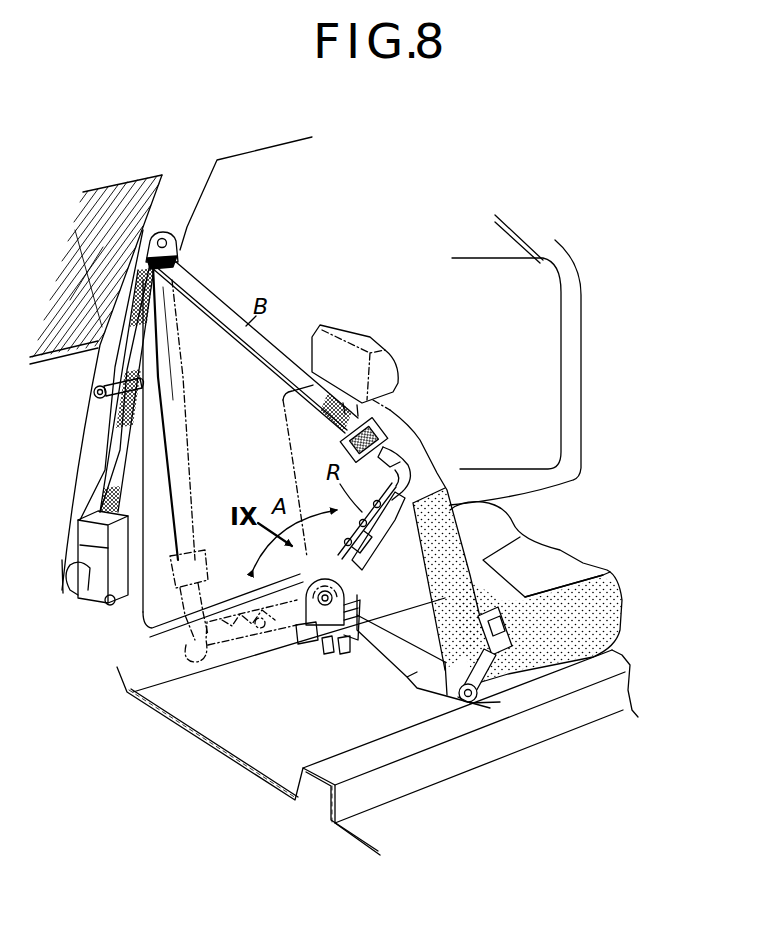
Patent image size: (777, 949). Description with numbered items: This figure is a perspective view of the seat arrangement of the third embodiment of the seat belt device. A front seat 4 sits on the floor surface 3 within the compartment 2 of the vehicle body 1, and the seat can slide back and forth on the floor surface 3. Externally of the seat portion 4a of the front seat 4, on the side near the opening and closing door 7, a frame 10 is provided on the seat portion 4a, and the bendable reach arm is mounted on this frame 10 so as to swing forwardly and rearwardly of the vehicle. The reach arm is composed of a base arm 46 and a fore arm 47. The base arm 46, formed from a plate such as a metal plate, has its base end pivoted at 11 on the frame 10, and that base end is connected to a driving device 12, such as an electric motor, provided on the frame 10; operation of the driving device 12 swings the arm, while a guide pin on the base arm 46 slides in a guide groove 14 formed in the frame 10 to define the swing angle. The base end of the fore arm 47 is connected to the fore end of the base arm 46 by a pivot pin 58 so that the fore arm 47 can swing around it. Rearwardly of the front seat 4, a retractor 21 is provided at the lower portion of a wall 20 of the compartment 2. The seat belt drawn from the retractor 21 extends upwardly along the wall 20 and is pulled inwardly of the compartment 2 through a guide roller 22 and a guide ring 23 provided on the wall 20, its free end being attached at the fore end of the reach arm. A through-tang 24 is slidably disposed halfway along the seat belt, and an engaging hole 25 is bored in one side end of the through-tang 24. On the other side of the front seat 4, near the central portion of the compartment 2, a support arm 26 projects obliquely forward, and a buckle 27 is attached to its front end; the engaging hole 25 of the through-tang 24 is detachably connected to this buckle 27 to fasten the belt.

The vehicle body 1 is at (181, 158).
The compartment 2 is at (162, 661).
The floor surface 3 is at (193, 713).
The front seat 4 is at (568, 545).
The seat portion 4a is at (602, 575).
The opening and closing door 7 is at (484, 468).
The frame 10 is at (295, 640).
The pivot 11 is at (318, 635).
The driving device 12 is at (345, 636).
The guide groove 14 is at (324, 588).
The wall 20 is at (160, 478).
The retractor 21 is at (100, 593).
The guide roller 22 is at (100, 383).
The guide ring 23 is at (177, 248).
The through-tang 24 is at (385, 433).
The engaging hole 25 is at (378, 458).
The support arm 26 is at (430, 690).
The buckle 27 is at (506, 637).
The base arm 46 is at (360, 585).
The fore arm 47 is at (374, 515).
The pivot pin 58 is at (366, 545).